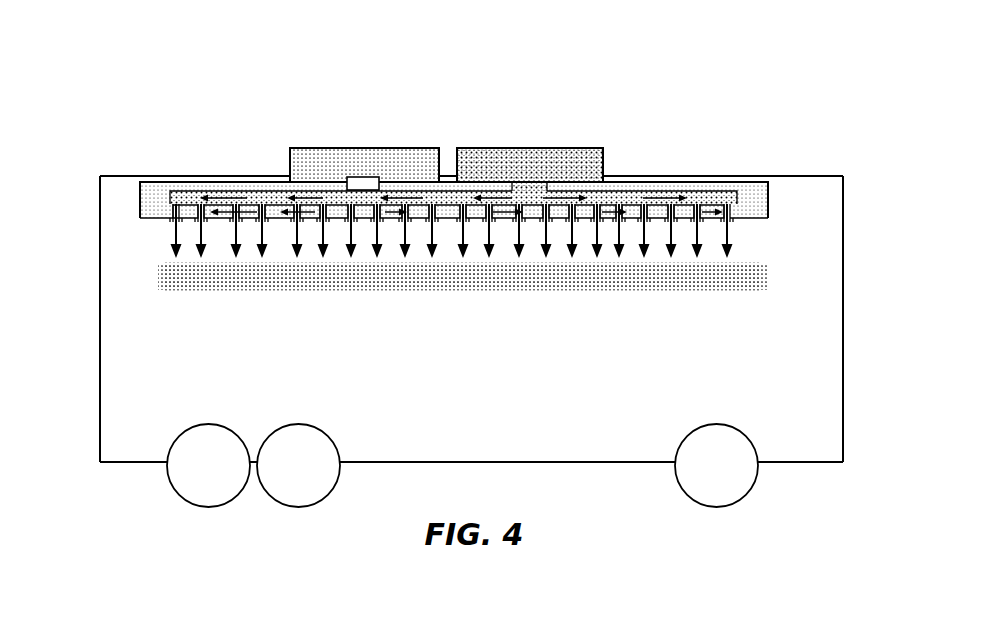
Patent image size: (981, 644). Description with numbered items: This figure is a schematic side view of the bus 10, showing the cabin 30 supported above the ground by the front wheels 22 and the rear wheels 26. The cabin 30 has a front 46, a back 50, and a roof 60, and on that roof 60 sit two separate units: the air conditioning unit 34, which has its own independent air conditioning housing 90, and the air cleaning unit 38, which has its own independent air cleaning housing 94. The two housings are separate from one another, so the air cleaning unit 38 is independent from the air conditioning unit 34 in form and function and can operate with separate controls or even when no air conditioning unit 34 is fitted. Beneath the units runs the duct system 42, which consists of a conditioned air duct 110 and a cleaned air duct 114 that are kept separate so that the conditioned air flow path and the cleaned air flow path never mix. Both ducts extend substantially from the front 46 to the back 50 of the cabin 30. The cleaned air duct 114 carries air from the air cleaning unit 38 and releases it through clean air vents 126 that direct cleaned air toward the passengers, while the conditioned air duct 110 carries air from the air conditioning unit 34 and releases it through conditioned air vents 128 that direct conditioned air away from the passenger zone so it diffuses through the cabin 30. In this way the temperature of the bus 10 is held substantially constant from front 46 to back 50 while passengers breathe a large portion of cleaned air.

The bus 10 is at (798, 95).
The front wheels 22 is at (727, 488).
The rear wheels 26 is at (217, 483).
The cabin 30 is at (570, 448).
The air conditioning unit 34 is at (364, 134).
The air cleaning unit 38 is at (530, 141).
The duct system 42 is at (625, 181).
The front 46 is at (843, 375).
The back 50 is at (100, 342).
The roof 60 is at (748, 173).
The air conditioning housing 90 is at (393, 152).
The air cleaning housing 94 is at (560, 147).
The conditioned air duct 110 is at (158, 188).
The cleaned air duct 114 is at (274, 197).
The clean air vents 126 is at (623, 220).
The conditioned air vents 128 is at (383, 221).